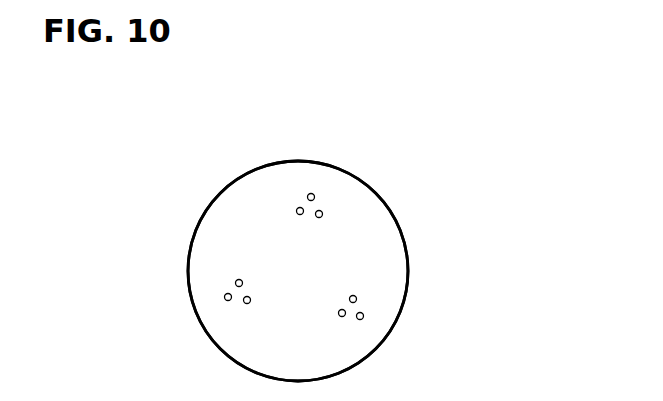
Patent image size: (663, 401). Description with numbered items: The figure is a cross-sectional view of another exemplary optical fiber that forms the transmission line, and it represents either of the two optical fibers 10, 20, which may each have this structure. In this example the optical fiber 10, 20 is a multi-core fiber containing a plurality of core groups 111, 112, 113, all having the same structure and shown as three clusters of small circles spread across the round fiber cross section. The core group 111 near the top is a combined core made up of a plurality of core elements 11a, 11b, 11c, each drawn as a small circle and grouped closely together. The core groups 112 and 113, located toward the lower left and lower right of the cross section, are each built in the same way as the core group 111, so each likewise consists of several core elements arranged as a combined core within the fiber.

The optical fiber 10 is at (309, 139).
The optical fiber 20 is at (298, 271).
The core group 111 is at (427, 180).
The core element 11a is at (313, 193).
The core element 11b is at (304, 209).
The core element 11c is at (323, 214).
The core group 112 is at (252, 278).
The core group 113 is at (363, 304).